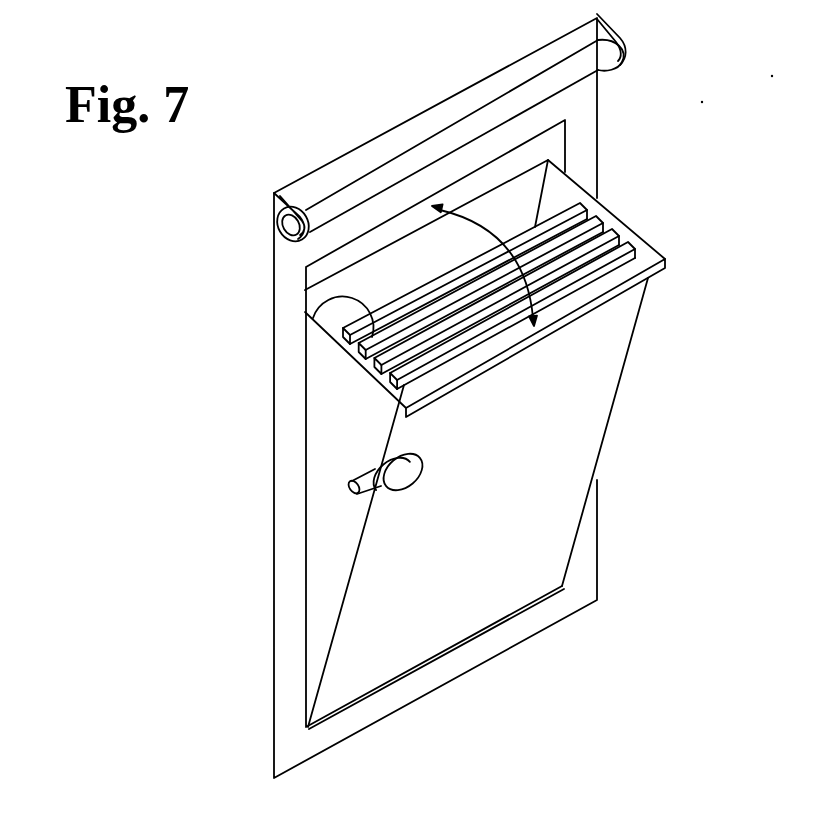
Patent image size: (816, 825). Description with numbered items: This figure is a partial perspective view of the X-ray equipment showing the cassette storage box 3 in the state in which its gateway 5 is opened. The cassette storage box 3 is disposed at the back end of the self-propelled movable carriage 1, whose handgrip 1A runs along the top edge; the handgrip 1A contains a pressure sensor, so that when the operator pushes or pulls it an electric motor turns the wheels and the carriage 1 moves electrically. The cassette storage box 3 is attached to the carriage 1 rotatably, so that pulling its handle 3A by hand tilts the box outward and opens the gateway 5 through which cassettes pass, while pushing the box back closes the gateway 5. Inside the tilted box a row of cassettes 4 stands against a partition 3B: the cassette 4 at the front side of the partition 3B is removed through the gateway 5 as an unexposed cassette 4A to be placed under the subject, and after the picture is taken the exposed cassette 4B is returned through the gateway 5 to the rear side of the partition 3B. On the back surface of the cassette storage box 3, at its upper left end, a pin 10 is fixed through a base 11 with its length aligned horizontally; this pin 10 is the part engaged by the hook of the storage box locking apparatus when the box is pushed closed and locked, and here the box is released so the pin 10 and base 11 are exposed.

The carriage 1 is at (284, 523).
The handgrip 1A is at (599, 65).
The cassette storage box 3 is at (520, 583).
The handle 3A is at (620, 290).
The partition 3B is at (313, 320).
The cassette 4 is at (648, 110).
The unexposed cassette 4A is at (612, 235).
The exposed cassette 4B is at (557, 210).
The gateway 5 is at (347, 288).
The pin 10 is at (350, 480).
The base 11 is at (418, 486).